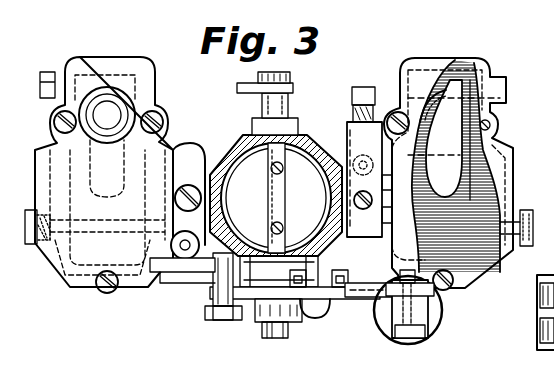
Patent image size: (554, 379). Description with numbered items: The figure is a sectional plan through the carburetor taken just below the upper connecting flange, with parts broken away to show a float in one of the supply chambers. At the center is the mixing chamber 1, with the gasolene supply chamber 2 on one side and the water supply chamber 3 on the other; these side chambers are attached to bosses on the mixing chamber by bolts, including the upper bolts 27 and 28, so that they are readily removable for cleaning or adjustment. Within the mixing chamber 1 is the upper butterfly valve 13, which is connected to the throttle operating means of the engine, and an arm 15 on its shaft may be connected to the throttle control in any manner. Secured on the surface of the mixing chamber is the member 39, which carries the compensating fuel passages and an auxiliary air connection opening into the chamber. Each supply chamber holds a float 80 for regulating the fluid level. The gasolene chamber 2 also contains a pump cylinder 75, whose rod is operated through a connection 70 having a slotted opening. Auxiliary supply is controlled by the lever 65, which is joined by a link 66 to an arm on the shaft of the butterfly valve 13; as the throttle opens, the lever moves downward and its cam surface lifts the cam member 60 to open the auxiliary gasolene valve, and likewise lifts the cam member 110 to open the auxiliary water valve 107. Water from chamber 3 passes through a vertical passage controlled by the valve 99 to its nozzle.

The mixing chamber 1 is at (237, 140).
The gasolene supply chamber 2 is at (495, 155).
The water supply chamber 3 is at (160, 143).
The upper butterfly valve 13 is at (297, 168).
The arm 15 is at (272, 74).
The bolt 27 is at (35, 252).
The bolt 28 is at (540, 207).
The member 39 is at (341, 118).
The cam member 60 is at (370, 300).
The lever 65 is at (355, 305).
The link 66 is at (316, 314).
The connection 70 is at (423, 313).
The pump cylinder 75 is at (406, 344).
The float 80 is at (475, 193).
The valve 99 is at (188, 188).
The valve 107 is at (160, 290).
The cam member 110 is at (166, 274).